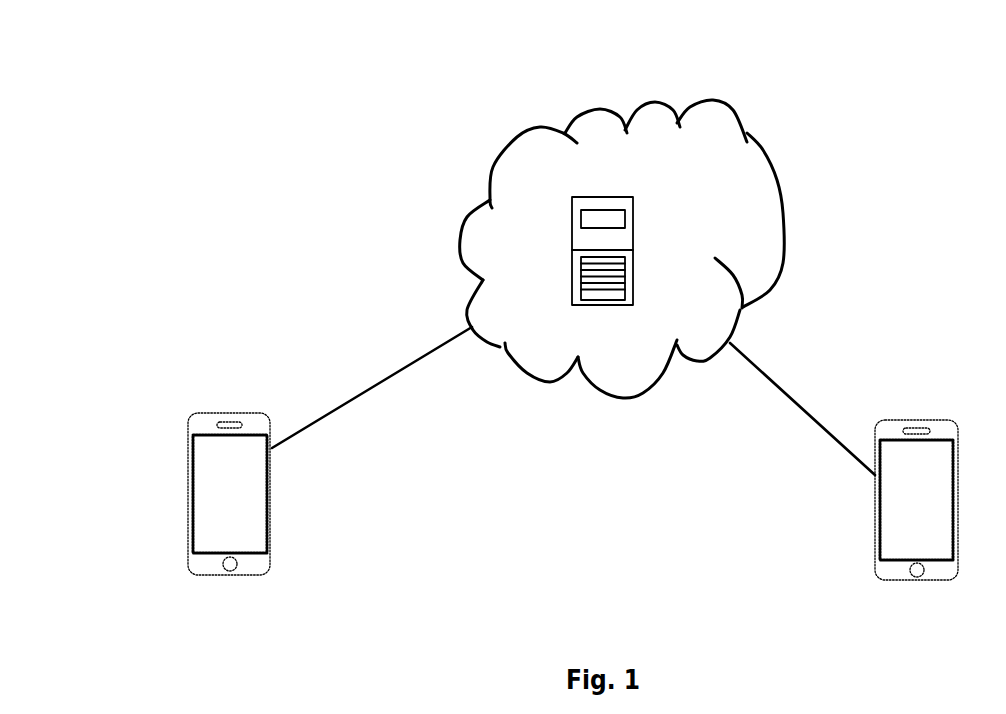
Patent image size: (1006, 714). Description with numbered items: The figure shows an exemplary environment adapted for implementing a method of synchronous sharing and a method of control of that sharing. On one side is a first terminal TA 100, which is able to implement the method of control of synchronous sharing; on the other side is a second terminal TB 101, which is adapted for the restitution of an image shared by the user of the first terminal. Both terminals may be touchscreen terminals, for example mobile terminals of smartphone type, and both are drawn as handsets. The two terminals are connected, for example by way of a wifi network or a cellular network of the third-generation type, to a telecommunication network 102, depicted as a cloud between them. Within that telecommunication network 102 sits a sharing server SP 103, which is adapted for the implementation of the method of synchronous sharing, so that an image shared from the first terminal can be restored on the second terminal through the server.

The first terminal TA 100 is at (258, 412).
The second terminal TB 101 is at (947, 420).
The telecommunication network 102 is at (727, 100).
The sharing server SP 103 is at (638, 243).